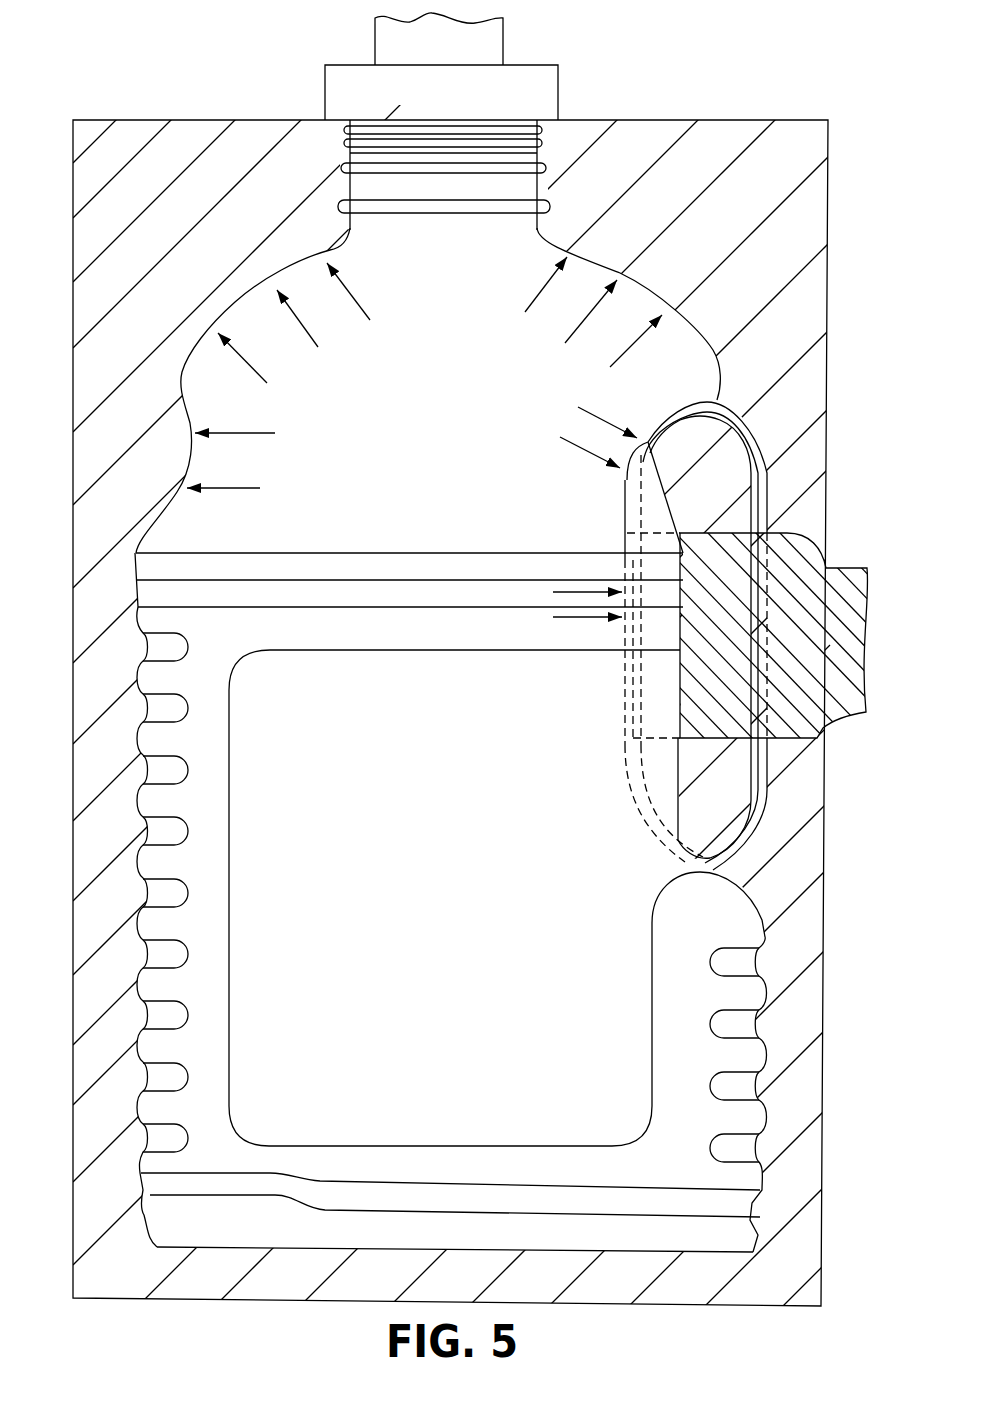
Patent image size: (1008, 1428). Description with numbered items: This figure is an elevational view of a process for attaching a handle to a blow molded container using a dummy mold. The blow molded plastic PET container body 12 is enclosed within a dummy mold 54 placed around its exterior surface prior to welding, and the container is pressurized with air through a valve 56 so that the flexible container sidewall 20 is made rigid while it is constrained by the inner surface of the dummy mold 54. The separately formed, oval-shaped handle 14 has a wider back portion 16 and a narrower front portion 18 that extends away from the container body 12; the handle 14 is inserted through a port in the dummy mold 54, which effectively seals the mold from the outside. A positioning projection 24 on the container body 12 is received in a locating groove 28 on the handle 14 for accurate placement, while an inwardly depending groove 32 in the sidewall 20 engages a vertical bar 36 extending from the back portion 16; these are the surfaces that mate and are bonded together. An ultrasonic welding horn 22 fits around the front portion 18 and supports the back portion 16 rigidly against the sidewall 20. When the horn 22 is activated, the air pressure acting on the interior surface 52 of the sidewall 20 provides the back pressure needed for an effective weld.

The container body 12 is at (404, 877).
The handle 14 is at (760, 797).
The back portion 16 is at (633, 785).
The front portion 18 is at (763, 760).
The sidewall 20 is at (627, 507).
The ultrasonic welding horn 22 is at (842, 565).
The positioning projection 24 is at (627, 533).
The locating groove 28 is at (632, 733).
The inwardly depending groove 32 is at (623, 690).
The vertical bar 36 is at (623, 663).
The interior surface 52 is at (622, 548).
The dummy mold 54 is at (180, 137).
The valve 56 is at (487, 42).